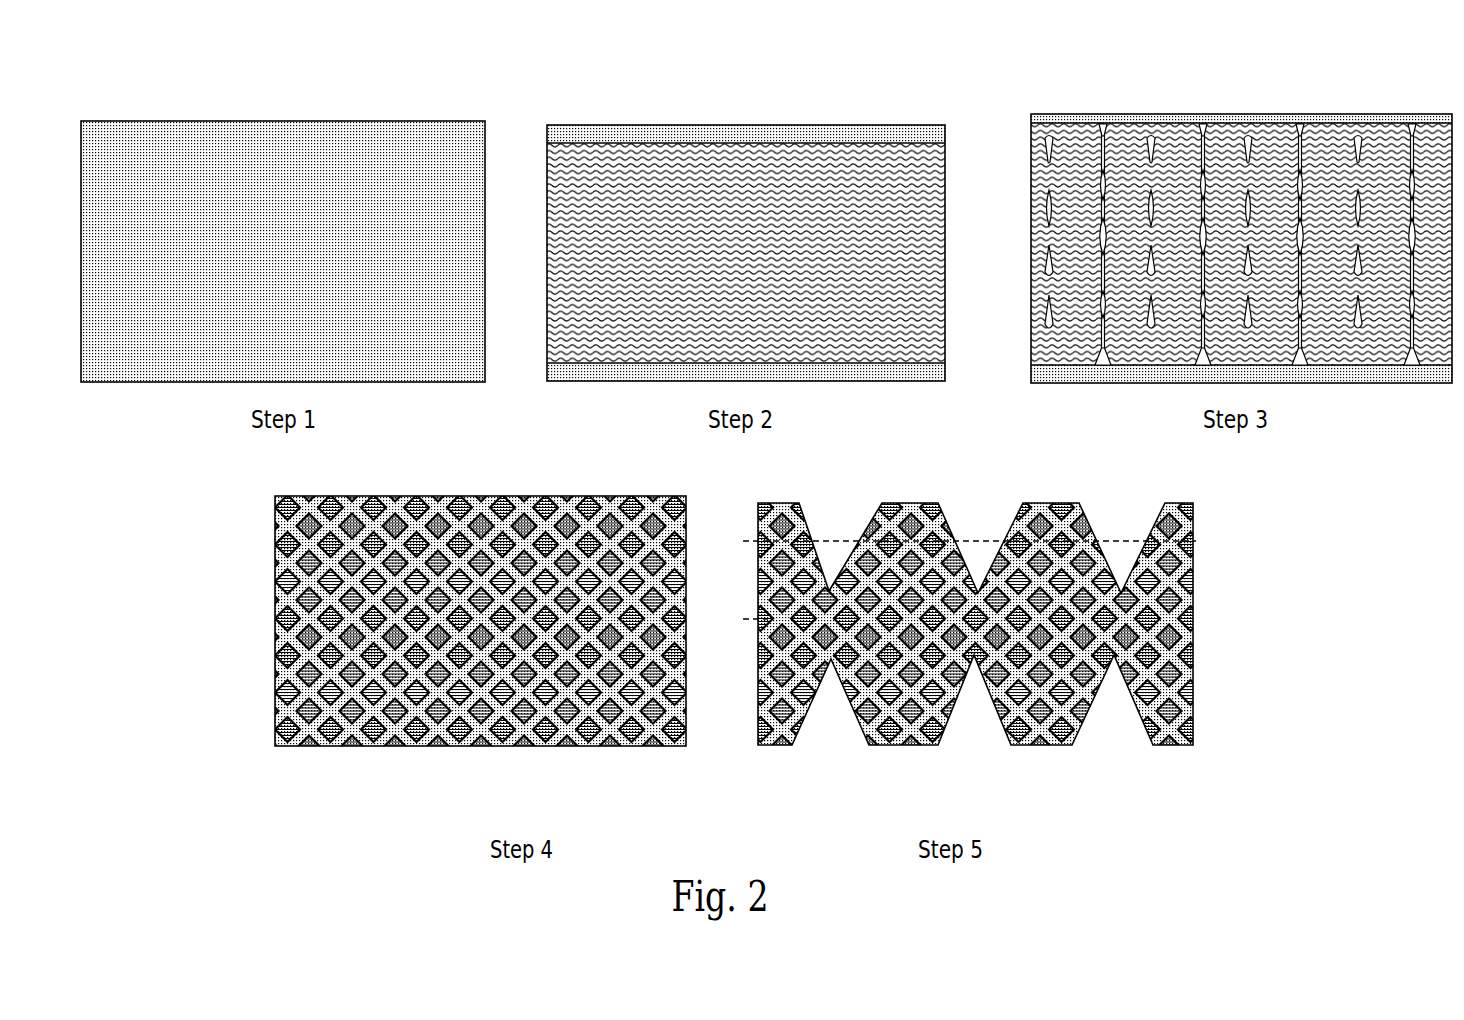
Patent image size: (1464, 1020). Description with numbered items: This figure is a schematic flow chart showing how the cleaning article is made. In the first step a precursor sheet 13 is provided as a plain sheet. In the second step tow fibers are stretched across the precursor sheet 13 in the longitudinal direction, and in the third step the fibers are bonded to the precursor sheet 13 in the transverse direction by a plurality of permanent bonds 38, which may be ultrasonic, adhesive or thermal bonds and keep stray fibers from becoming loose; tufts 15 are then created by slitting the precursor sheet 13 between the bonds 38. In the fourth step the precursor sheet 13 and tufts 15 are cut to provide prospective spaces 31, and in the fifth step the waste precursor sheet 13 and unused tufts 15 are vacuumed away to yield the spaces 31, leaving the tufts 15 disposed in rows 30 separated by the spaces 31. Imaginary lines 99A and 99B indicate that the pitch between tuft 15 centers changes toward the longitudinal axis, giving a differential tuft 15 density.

The precursor sheet 13 is at (428, 152).
The bonds 38 is at (1287, 117).
The tufts 15 is at (545, 735).
The spaces 31 is at (970, 509).
The rows 30 is at (1188, 502).
The imaginary line 99A is at (948, 545).
The imaginary line 99B is at (734, 619).